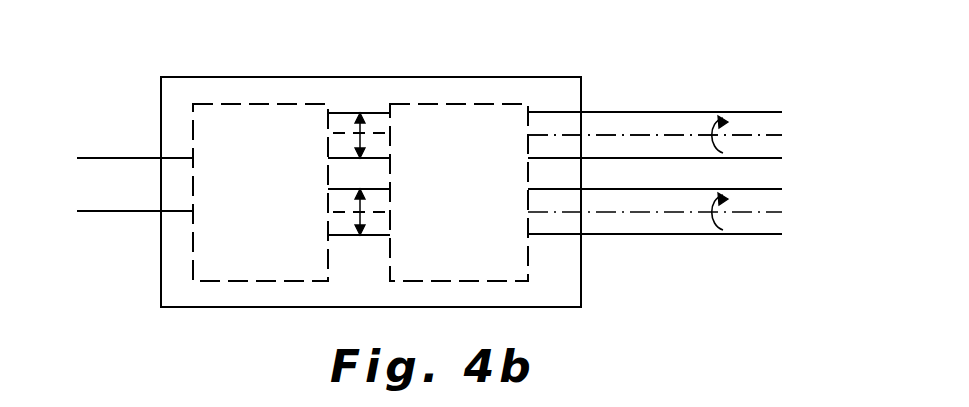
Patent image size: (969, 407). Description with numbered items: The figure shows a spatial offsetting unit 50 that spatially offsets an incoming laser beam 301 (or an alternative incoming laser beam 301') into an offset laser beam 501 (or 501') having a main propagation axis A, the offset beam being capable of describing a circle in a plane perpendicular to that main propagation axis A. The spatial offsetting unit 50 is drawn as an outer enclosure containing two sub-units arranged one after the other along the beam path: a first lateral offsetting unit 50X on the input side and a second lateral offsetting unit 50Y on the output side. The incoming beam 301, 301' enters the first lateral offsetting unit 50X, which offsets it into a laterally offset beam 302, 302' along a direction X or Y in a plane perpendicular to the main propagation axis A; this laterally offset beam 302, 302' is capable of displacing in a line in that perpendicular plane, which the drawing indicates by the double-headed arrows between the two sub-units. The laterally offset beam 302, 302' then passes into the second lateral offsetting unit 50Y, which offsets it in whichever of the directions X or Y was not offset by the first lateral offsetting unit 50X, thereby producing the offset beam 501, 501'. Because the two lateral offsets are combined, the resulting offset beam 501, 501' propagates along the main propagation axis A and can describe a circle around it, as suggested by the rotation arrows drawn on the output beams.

The spatial offsetting unit 50 is at (338, 77).
The first lateral offsetting unit 50X is at (238, 104).
The second lateral offsetting unit 50Y is at (468, 104).
The laterally offset beam 302' is at (364, 79).
The laterally offset beam 302 is at (338, 271).
The incoming laser beam 301' is at (110, 137).
The incoming laser beam 301 is at (113, 231).
The offset laser beam 501' is at (655, 98).
The offset laser beam 501 is at (655, 250).
The main propagation axis A is at (732, 133).